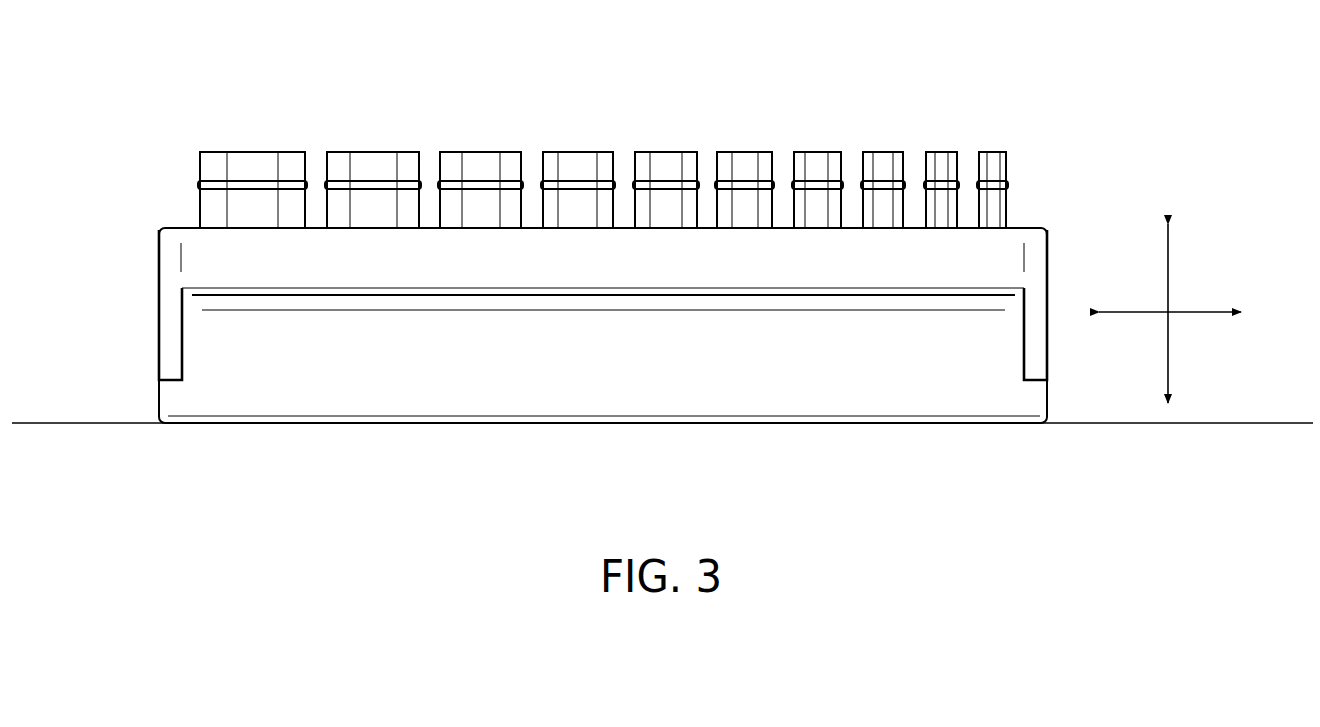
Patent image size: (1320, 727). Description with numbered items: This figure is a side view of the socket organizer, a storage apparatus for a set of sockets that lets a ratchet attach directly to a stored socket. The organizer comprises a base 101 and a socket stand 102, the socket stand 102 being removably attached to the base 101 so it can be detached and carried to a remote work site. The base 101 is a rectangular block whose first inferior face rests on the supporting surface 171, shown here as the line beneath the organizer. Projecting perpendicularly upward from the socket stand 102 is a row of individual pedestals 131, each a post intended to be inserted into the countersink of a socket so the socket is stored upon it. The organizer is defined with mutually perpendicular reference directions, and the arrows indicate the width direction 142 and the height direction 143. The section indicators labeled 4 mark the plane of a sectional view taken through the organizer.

The base 101 is at (923, 412).
The socket stand 102 is at (1012, 257).
The individual pedestal 131 is at (250, 152).
The width direction 142 is at (1202, 311).
The height direction 143 is at (1172, 294).
The supporting surface 171 is at (72, 425).
The section line 4- 4 is at (706, 173).